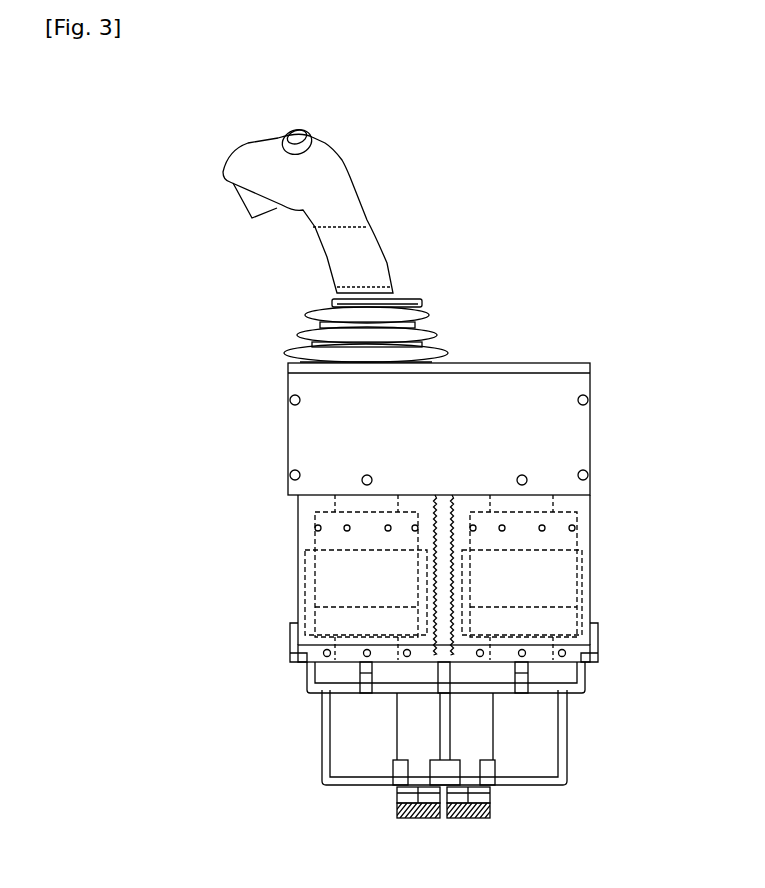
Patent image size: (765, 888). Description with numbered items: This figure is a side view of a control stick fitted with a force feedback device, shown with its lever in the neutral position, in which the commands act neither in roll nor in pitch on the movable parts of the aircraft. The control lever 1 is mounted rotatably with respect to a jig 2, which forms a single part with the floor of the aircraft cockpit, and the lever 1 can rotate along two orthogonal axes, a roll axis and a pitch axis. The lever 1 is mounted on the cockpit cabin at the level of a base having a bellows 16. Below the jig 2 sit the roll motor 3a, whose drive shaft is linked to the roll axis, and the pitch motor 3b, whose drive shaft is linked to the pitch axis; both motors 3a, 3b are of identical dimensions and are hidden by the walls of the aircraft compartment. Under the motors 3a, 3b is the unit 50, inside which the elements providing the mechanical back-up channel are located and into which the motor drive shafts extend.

The control lever 1 is at (375, 185).
The bellows 16 is at (448, 325).
The jig 2 is at (602, 423).
The electric motor (roll motor) 3a is at (345, 578).
The electric motor (pitch motor) 3b is at (543, 578).
The unit 50 is at (567, 738).